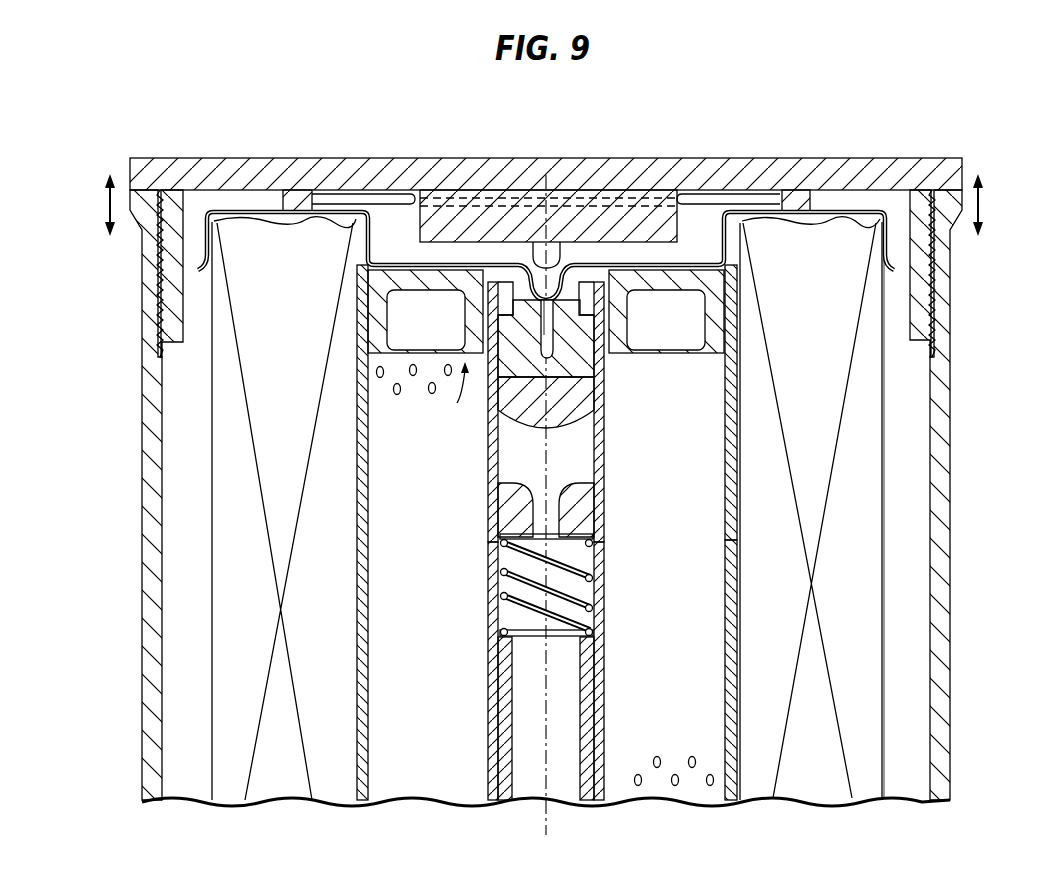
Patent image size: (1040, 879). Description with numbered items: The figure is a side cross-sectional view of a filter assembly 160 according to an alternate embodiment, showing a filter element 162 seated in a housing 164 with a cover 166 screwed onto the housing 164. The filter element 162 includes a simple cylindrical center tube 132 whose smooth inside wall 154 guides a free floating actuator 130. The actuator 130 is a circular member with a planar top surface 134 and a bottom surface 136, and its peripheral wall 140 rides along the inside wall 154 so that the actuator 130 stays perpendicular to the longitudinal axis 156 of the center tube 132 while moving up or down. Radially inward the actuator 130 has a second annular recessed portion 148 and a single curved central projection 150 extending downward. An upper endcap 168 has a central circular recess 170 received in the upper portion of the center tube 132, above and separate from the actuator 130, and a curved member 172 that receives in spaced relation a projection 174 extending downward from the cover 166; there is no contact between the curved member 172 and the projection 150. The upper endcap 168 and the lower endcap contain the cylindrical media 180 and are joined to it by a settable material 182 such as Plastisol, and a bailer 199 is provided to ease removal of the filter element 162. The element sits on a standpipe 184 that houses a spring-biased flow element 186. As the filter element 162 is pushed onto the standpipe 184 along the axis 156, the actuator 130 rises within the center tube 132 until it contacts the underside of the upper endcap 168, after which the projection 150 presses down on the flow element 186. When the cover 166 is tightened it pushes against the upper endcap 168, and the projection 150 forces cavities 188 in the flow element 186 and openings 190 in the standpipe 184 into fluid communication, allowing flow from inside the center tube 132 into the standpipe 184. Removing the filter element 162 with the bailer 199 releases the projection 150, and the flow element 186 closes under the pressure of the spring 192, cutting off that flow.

The actuator 130 is at (444, 396).
The center tube 132 is at (727, 567).
The top surface 134 is at (367, 265).
The bottom surface 136 is at (392, 350).
The wall 140 is at (368, 315).
The second annular recessed portion 148 is at (577, 360).
The central projection 150 is at (492, 418).
The inside wall 154 is at (725, 650).
The longitudinal axis 156 is at (546, 158).
The filter assembly 160 is at (119, 751).
The filter element 162 is at (910, 520).
The housing 164 is at (938, 630).
The cover 166 is at (660, 168).
The upper endcap 168 is at (823, 212).
The central circular recess 170 is at (690, 258).
The curved member 172 is at (556, 282).
The projection 174 is at (548, 252).
The cylindrical media 180 is at (870, 470).
The settable material 182 is at (295, 220).
The standpipe 184 is at (602, 557).
The flow element 186 is at (527, 472).
The cavities 188 is at (598, 420).
The openings 190 is at (602, 453).
The spring 192 is at (585, 598).
The bailer 199 is at (752, 200).